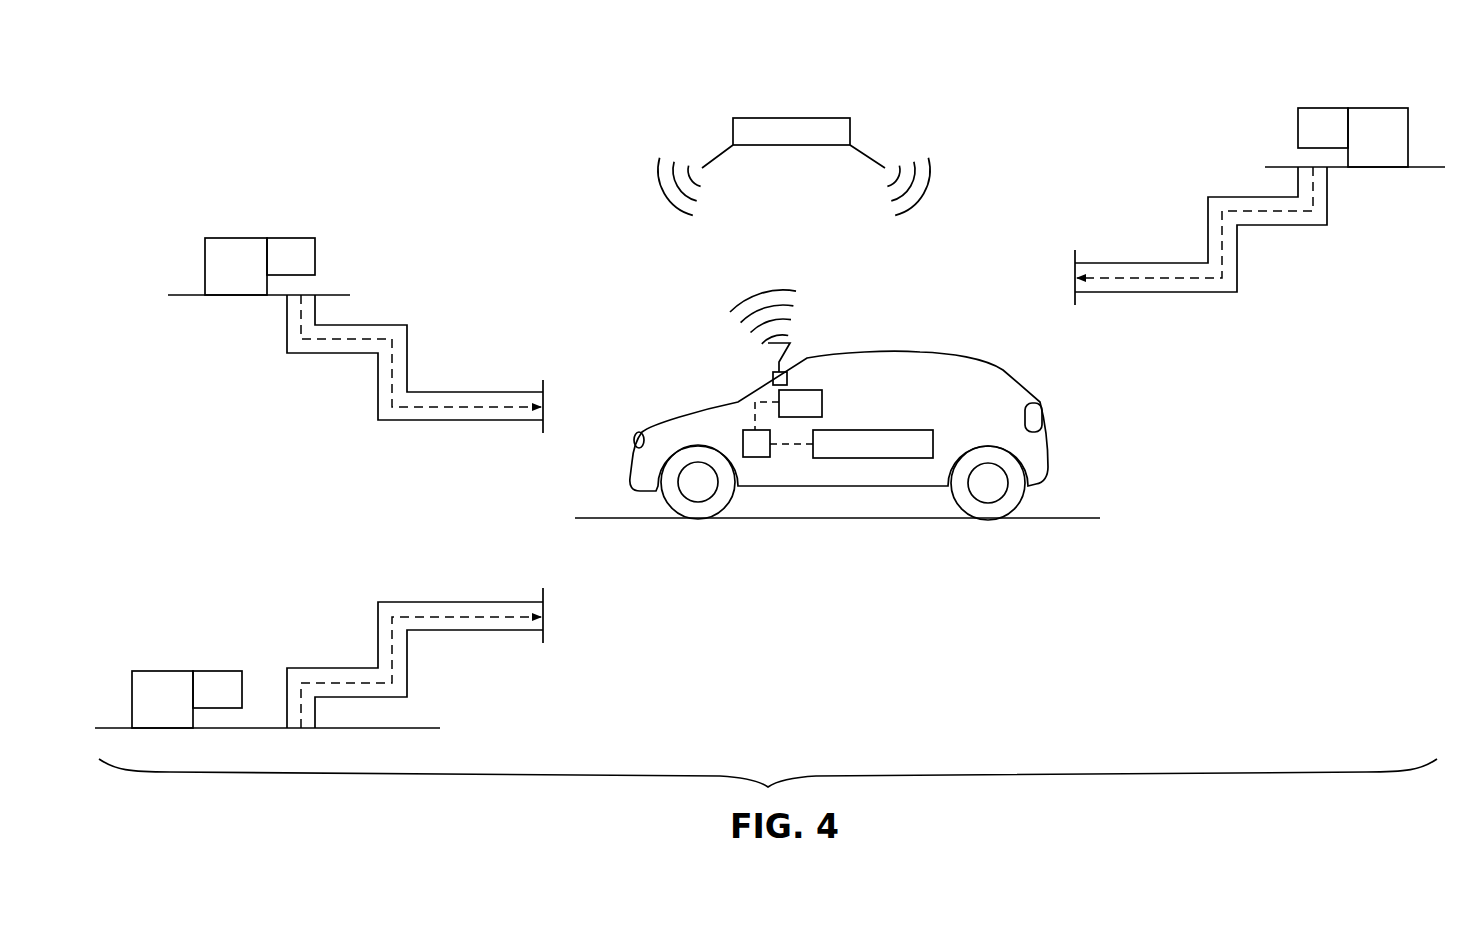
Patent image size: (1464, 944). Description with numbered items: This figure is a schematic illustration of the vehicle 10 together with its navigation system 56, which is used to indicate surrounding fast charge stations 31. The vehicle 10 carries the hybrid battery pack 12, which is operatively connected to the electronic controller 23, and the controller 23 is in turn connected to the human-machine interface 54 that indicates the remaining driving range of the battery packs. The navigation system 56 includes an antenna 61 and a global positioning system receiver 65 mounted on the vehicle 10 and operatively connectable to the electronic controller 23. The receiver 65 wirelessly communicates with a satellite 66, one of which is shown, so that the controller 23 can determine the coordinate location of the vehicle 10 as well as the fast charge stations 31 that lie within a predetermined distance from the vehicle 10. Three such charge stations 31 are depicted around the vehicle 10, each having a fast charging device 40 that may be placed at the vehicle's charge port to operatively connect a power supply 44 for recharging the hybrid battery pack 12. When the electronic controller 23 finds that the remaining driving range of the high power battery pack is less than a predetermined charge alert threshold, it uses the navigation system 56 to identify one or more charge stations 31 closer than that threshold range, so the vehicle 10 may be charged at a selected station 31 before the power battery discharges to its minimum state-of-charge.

The vehicle 10 is at (932, 292).
The hybrid battery pack 12 is at (870, 458).
The electronic controller 23 is at (755, 457).
The fast charge station 31 is at (773, 396).
The fast charging device 40 is at (303, 276).
The power supply 44 is at (250, 283).
The human-machine interface 54 is at (822, 403).
The navigation system 56 is at (784, 345).
The antenna 61 is at (788, 378).
The global positioning system receiver 65 is at (790, 345).
The satellite 66 is at (813, 118).